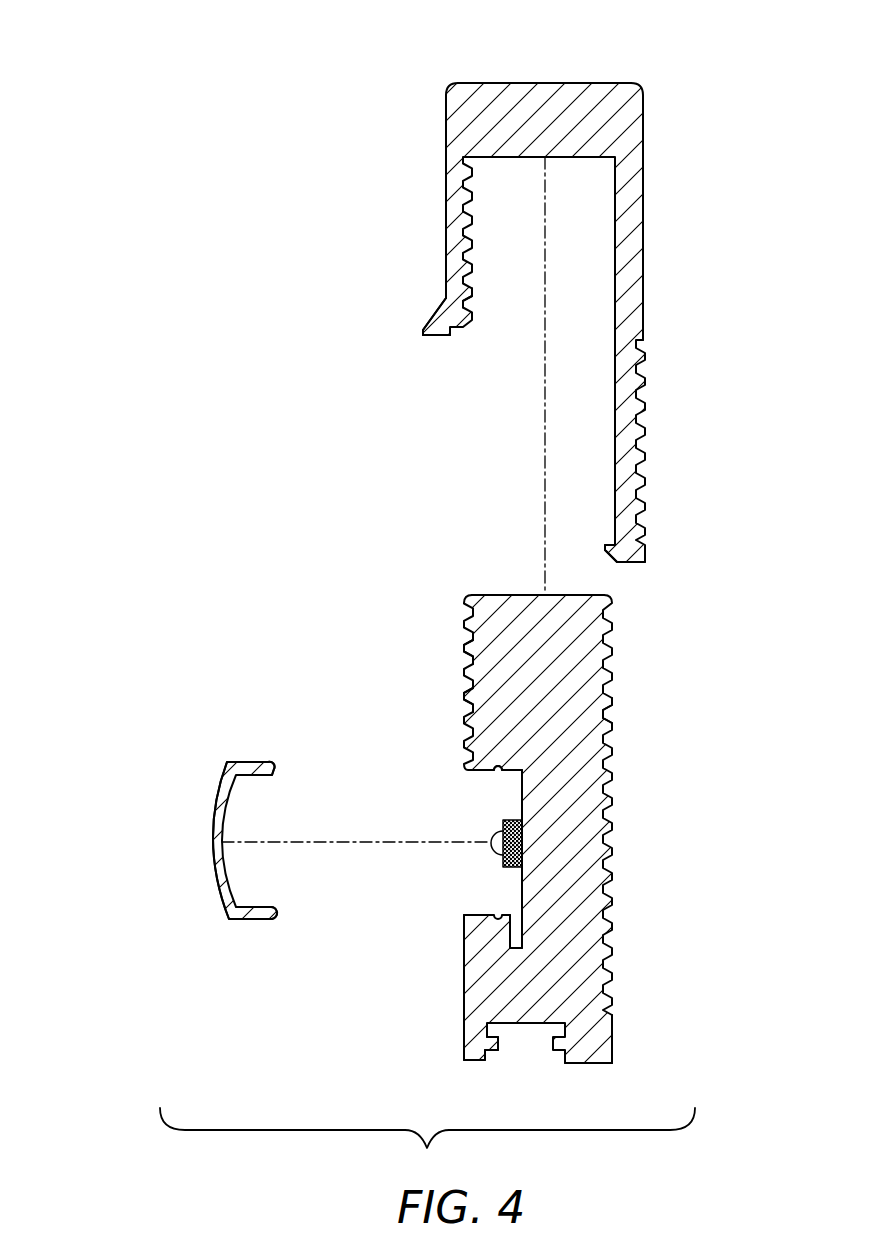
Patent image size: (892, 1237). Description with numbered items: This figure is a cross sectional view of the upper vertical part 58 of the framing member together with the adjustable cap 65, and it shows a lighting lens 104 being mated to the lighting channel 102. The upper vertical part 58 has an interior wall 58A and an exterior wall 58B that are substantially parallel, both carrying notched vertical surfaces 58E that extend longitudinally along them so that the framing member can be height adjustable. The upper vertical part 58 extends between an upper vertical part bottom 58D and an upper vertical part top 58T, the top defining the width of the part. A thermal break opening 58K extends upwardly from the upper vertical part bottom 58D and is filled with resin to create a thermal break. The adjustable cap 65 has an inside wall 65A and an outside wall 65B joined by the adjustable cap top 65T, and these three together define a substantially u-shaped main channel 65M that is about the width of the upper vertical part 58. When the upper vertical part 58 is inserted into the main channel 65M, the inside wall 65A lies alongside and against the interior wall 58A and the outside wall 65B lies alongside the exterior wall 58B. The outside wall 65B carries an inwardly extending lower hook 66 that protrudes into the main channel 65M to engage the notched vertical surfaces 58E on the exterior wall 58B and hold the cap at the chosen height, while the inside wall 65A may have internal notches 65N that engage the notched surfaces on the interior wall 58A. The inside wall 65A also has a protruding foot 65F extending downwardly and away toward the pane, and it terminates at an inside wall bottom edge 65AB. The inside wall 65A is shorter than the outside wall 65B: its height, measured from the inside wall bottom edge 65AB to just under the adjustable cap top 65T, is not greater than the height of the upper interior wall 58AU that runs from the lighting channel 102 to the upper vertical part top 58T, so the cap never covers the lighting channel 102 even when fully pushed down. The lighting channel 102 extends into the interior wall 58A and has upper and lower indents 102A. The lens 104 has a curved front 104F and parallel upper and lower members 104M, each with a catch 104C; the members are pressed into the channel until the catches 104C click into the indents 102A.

The adjustable cap 65 is at (645, 104).
The adjustable cap top 65T is at (551, 83).
The inside wall 65A is at (446, 200).
The outside wall 65B is at (645, 225).
The internal notches 65N is at (473, 297).
The main channel 65M is at (615, 290).
The protruding foot 65F is at (425, 325).
The inside wall bottom edge 65AB is at (437, 337).
The lower hook 66 is at (605, 548).
The upper vertical part 58 is at (613, 1048).
The upper vertical part top 58T is at (495, 597).
The notched vertical surfaces 58E is at (465, 660).
The upper interior wall 58AU is at (465, 710).
The interior wall 58A is at (464, 985).
The exterior wall 58B is at (613, 1018).
The thermal break opening 58K is at (490, 1060).
The upper vertical part bottom 58D is at (585, 1065).
The lighting channel 102 is at (497, 772).
The indent 102A is at (517, 775).
The lens 104 is at (228, 912).
The upper and lower members 104M is at (240, 765).
The catch 104C is at (273, 766).
The curved front 104F is at (214, 830).